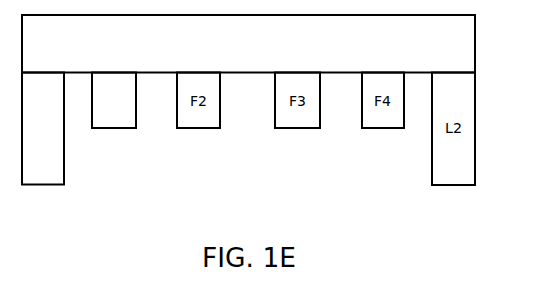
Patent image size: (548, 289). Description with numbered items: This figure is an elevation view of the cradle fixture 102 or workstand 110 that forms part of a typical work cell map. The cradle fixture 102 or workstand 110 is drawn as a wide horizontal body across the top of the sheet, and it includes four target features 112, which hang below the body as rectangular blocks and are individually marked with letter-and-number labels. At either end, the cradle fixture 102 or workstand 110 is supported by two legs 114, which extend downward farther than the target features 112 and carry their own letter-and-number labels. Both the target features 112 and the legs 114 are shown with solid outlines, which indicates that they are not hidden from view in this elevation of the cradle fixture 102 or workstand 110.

The cradle fixture 102 is at (248, 44).
The workstand 110 is at (248, 44).
The target features 112 is at (116, 130).
The legs 114 is at (43, 186).